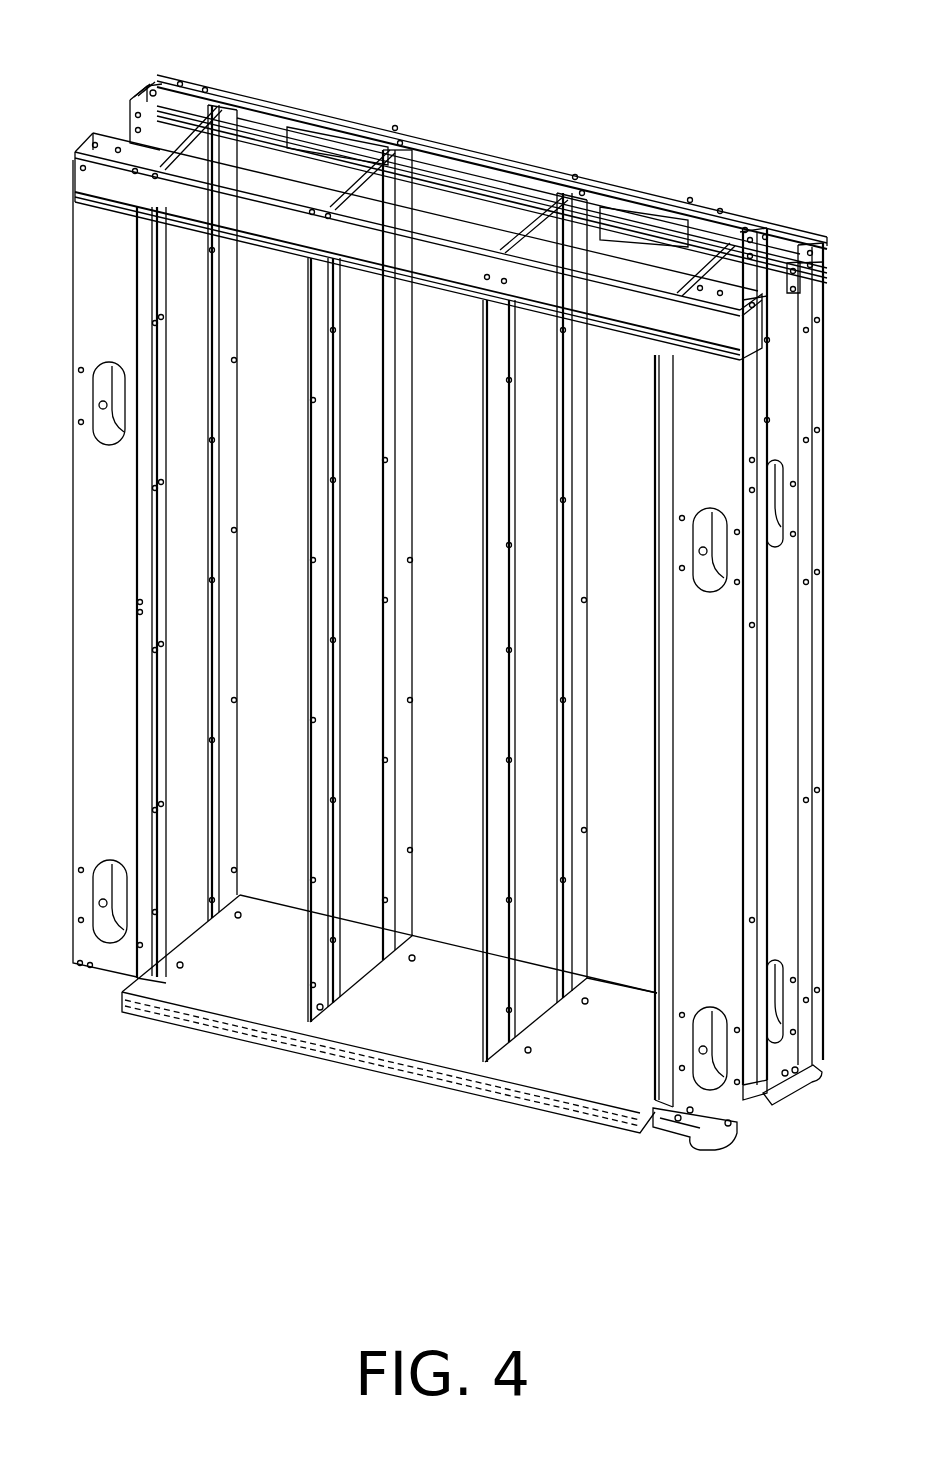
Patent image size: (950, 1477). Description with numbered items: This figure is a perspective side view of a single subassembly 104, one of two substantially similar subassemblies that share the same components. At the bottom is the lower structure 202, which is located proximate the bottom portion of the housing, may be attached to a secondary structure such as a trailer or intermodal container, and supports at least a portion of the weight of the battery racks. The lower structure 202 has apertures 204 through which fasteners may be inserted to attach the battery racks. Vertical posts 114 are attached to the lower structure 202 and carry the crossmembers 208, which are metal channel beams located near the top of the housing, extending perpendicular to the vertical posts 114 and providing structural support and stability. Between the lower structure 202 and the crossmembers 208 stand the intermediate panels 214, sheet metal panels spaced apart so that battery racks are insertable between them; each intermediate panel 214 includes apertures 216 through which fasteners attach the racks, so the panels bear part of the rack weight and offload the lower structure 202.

The subassembly 104 is at (748, 122).
The vertical post 114 is at (128, 73).
The crossmember 208 is at (340, 118).
The aperture 204 is at (180, 966).
The lower structure 202 is at (225, 984).
The intermediate panel 214 is at (310, 1010).
The aperture 216 is at (333, 1003).